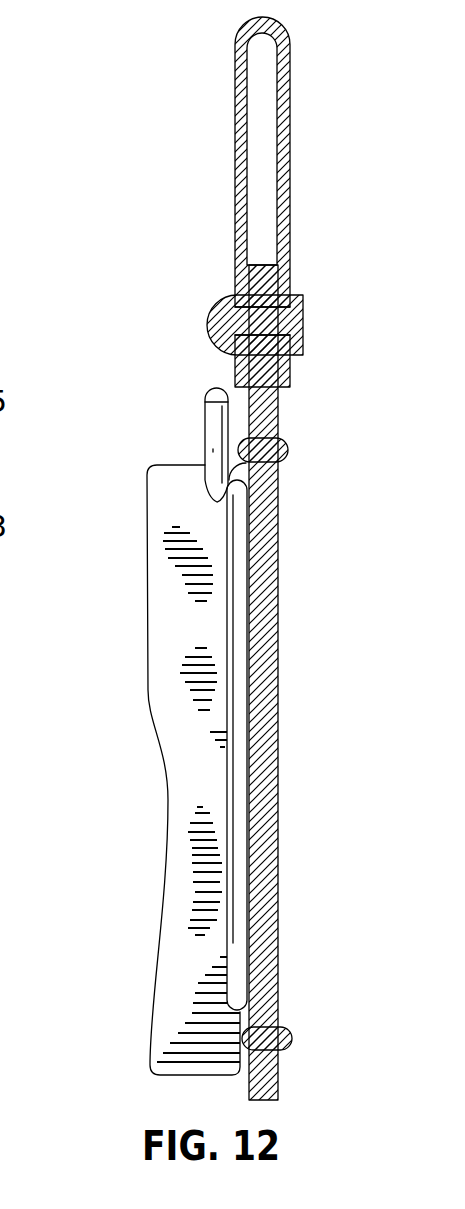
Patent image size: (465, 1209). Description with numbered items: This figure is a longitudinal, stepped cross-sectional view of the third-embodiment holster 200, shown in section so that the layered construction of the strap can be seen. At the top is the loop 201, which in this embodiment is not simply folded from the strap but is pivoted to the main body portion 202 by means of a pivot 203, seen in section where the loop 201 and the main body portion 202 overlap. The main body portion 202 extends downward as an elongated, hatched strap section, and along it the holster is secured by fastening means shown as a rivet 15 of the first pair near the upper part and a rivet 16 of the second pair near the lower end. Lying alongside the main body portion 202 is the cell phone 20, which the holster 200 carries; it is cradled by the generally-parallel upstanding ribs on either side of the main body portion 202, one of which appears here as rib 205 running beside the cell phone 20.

The cell phone 20 is at (164, 735).
The upstanding rib 205 is at (237, 613).
The holster 200 is at (155, 427).
The main body portion 202 is at (283, 647).
The loop 201 is at (232, 113).
The pivot 203 is at (205, 318).
The first pair of rivets 15 is at (283, 447).
The second pair of rivets 16 is at (292, 1034).